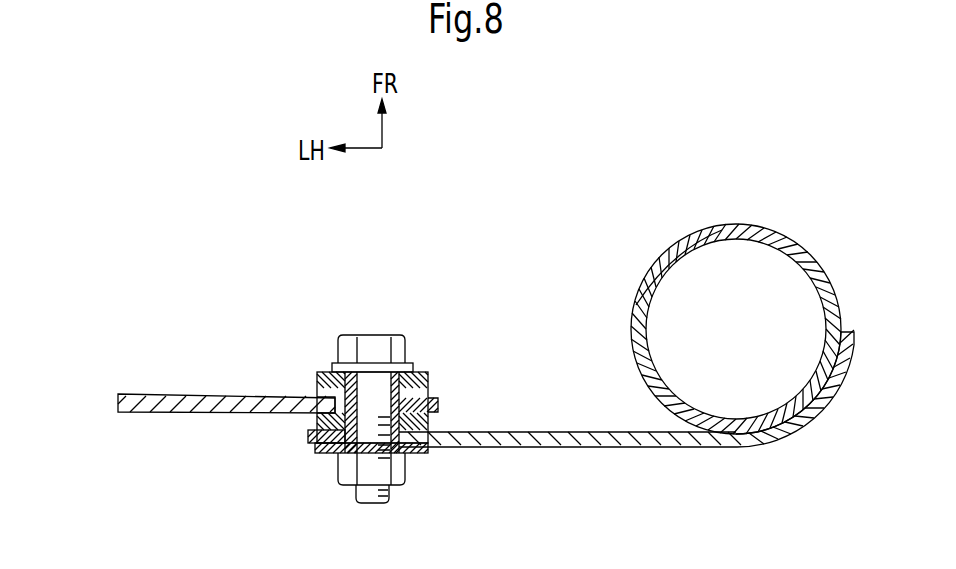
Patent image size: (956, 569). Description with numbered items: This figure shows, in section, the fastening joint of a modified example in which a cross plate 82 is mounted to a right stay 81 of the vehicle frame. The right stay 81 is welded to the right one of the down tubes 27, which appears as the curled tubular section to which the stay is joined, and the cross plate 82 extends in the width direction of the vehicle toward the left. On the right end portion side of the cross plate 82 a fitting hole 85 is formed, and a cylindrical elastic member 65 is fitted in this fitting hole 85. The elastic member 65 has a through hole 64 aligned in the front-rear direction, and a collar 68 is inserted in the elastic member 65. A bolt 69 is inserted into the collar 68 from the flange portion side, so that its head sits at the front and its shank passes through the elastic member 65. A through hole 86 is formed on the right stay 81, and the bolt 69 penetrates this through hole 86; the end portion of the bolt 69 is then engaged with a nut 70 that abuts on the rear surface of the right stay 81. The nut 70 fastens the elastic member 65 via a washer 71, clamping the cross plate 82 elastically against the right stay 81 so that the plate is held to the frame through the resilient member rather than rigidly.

The down tube 27 is at (745, 224).
The right stay 81 is at (535, 432).
The cross plate 82 is at (183, 394).
The through hole 64 is at (386, 400).
The collar 68 is at (325, 373).
The bolt 69 is at (370, 348).
The elastic member 65 is at (437, 397).
The fitting hole 85 is at (315, 437).
The washer 71 is at (425, 450).
The nut 70 is at (345, 475).
The through hole 86 is at (380, 448).